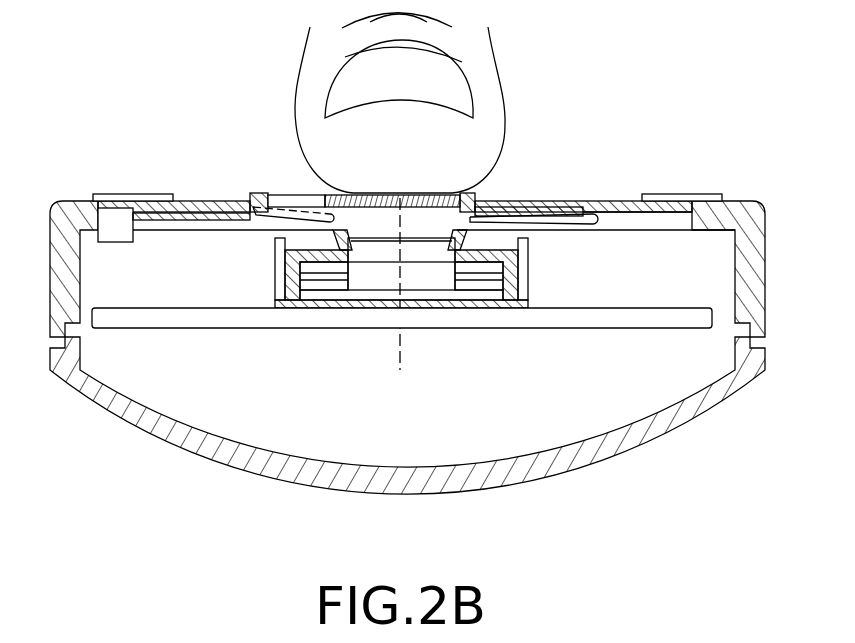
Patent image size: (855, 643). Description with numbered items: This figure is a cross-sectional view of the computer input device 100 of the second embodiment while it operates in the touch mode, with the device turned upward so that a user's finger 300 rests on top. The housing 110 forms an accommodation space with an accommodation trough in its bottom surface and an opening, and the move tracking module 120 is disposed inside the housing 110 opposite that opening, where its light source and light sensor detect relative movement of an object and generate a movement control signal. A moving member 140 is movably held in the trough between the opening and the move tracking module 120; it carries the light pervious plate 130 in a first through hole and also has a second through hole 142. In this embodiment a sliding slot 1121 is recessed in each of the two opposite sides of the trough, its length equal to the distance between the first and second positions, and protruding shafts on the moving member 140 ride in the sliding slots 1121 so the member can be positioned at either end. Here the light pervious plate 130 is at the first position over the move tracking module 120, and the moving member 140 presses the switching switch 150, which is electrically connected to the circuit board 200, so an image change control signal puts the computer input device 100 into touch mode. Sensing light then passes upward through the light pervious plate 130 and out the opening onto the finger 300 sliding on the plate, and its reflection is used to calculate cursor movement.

The computer input device 100 is at (152, 56).
The housing 110 is at (167, 433).
The move tracking module 120 is at (390, 233).
The sliding slot 1121 is at (592, 224).
The light pervious plate 130 is at (496, 236).
The moving member 140 is at (170, 198).
The second through hole 142 is at (287, 196).
The switching switch 150 is at (116, 223).
The circuit board 200 is at (255, 322).
The finger 300 is at (490, 58).